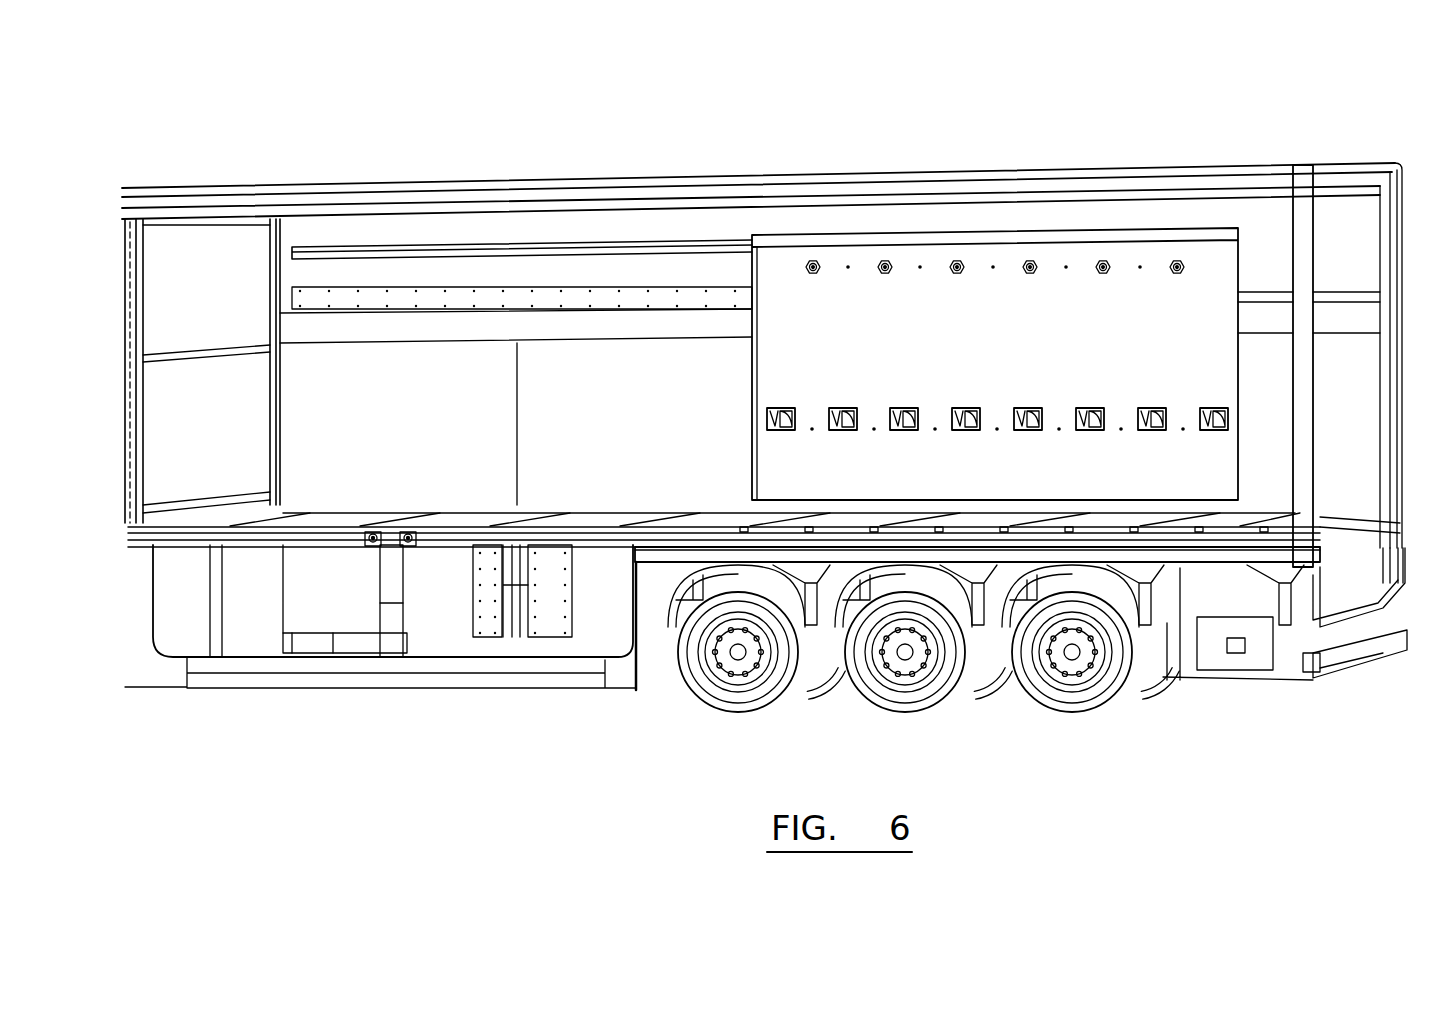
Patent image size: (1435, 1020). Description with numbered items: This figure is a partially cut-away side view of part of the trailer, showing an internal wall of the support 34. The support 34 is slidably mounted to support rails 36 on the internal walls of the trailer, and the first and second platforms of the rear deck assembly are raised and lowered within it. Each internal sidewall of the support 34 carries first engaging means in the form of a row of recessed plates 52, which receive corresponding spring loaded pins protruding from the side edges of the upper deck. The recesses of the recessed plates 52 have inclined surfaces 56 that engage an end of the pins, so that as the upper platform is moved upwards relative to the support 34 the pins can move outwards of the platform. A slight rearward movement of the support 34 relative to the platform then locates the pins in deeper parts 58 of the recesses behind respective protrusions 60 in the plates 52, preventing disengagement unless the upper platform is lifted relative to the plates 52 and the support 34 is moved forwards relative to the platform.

The support 34 is at (1132, 292).
The support rails 36 is at (690, 290).
The recessed plates 52 is at (1030, 408).
The inclined surfaces 56 is at (906, 430).
The deeper parts 58 is at (775, 432).
The protrusions 60 is at (847, 408).